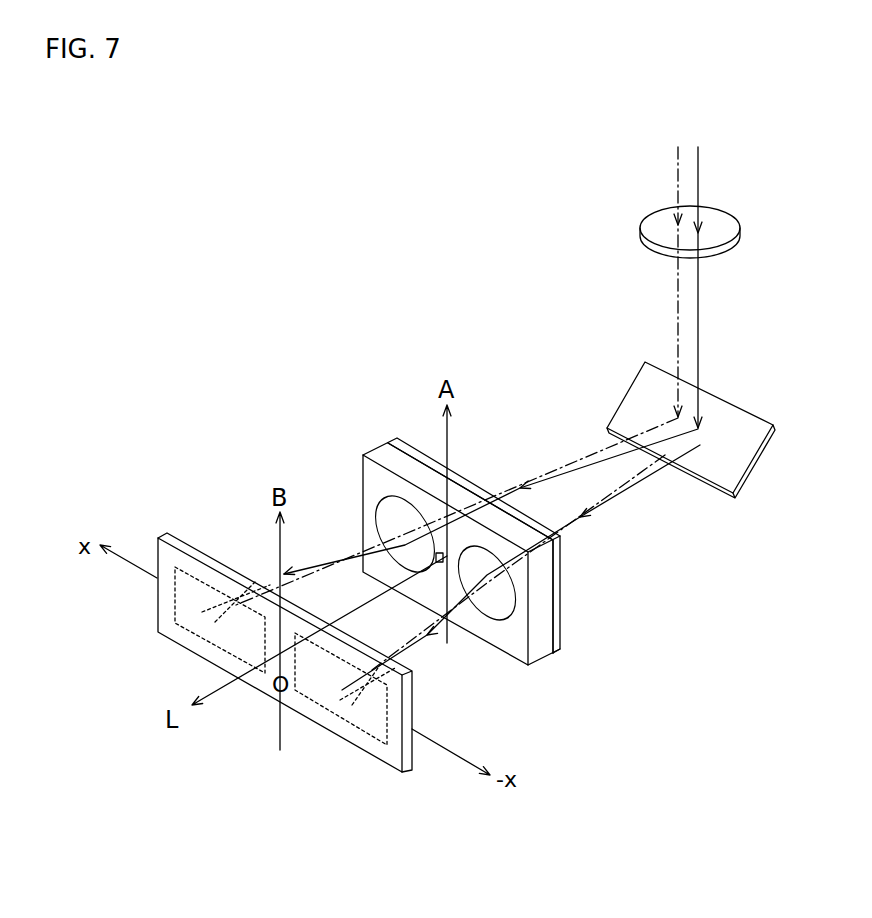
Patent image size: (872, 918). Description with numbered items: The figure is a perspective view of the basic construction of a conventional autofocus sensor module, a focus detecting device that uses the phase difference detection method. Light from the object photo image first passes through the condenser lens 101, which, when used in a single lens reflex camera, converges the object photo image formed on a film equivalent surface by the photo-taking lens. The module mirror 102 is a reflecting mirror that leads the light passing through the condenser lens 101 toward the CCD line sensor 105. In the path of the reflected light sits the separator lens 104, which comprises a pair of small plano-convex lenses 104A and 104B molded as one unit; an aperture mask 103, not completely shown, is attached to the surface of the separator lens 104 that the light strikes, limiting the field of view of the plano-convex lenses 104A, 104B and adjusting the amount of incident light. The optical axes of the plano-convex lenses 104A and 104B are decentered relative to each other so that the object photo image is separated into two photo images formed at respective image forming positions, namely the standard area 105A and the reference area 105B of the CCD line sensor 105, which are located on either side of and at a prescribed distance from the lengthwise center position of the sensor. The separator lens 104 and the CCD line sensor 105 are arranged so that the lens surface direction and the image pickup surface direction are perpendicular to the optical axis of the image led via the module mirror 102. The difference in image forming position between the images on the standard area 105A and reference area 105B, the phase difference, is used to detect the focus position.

The condenser lens 101 is at (720, 226).
The module mirror 102 is at (737, 449).
The aperture mask 103 is at (468, 482).
The separator lens 104 is at (377, 447).
The plano-convex lens 104A is at (386, 516).
The plano-convex lens 104B is at (503, 603).
The CCD line sensor 105 is at (398, 768).
The standard area 105A is at (185, 652).
The reference area 105B is at (345, 742).